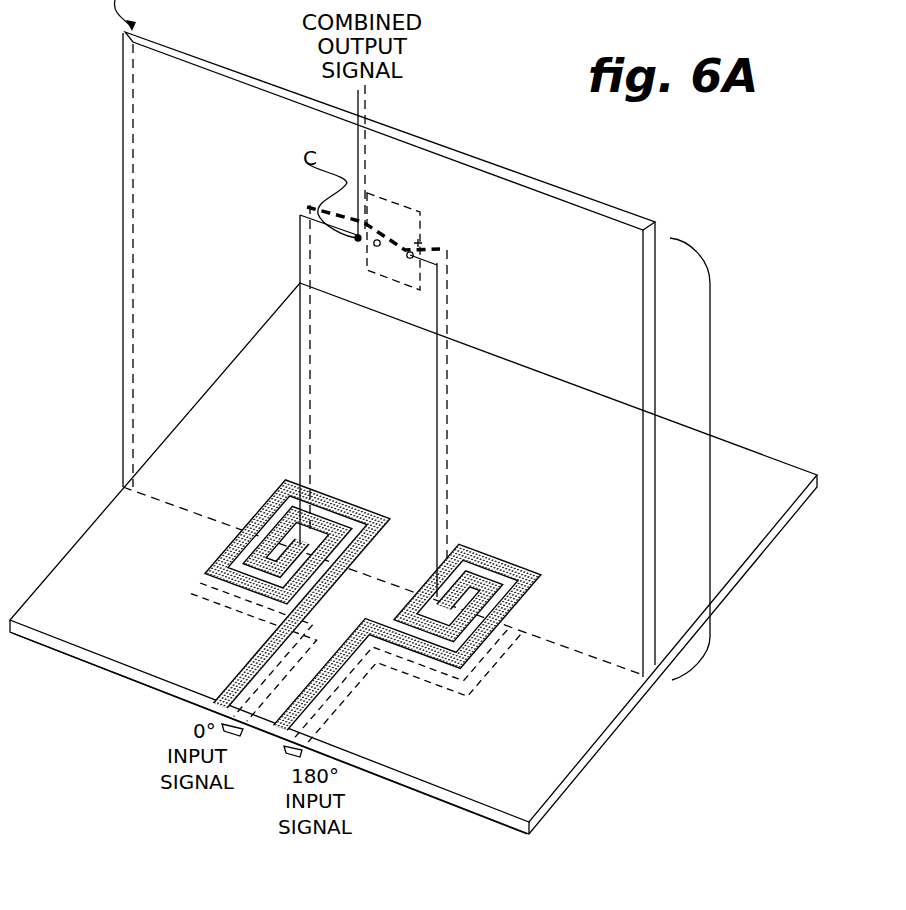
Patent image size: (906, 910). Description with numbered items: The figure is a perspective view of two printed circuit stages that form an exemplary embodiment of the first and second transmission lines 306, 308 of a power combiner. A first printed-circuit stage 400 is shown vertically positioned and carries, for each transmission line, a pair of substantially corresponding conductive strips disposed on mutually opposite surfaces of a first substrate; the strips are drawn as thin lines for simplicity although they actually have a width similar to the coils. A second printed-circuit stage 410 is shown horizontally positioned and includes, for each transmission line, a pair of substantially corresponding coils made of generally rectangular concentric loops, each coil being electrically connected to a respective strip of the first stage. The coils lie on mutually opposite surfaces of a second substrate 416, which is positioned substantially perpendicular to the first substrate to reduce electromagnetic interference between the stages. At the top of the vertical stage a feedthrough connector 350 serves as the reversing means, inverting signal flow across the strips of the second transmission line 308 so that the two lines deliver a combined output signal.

The first printed-circuit stage 400 is at (817, 474).
The second printed-circuit stage 410 is at (820, 497).
The second substrate 416 is at (427, 790).
The feedthrough connector 350 is at (393, 202).
The first transmission line 306 is at (372, 498).
The second transmission line 308 is at (479, 545).